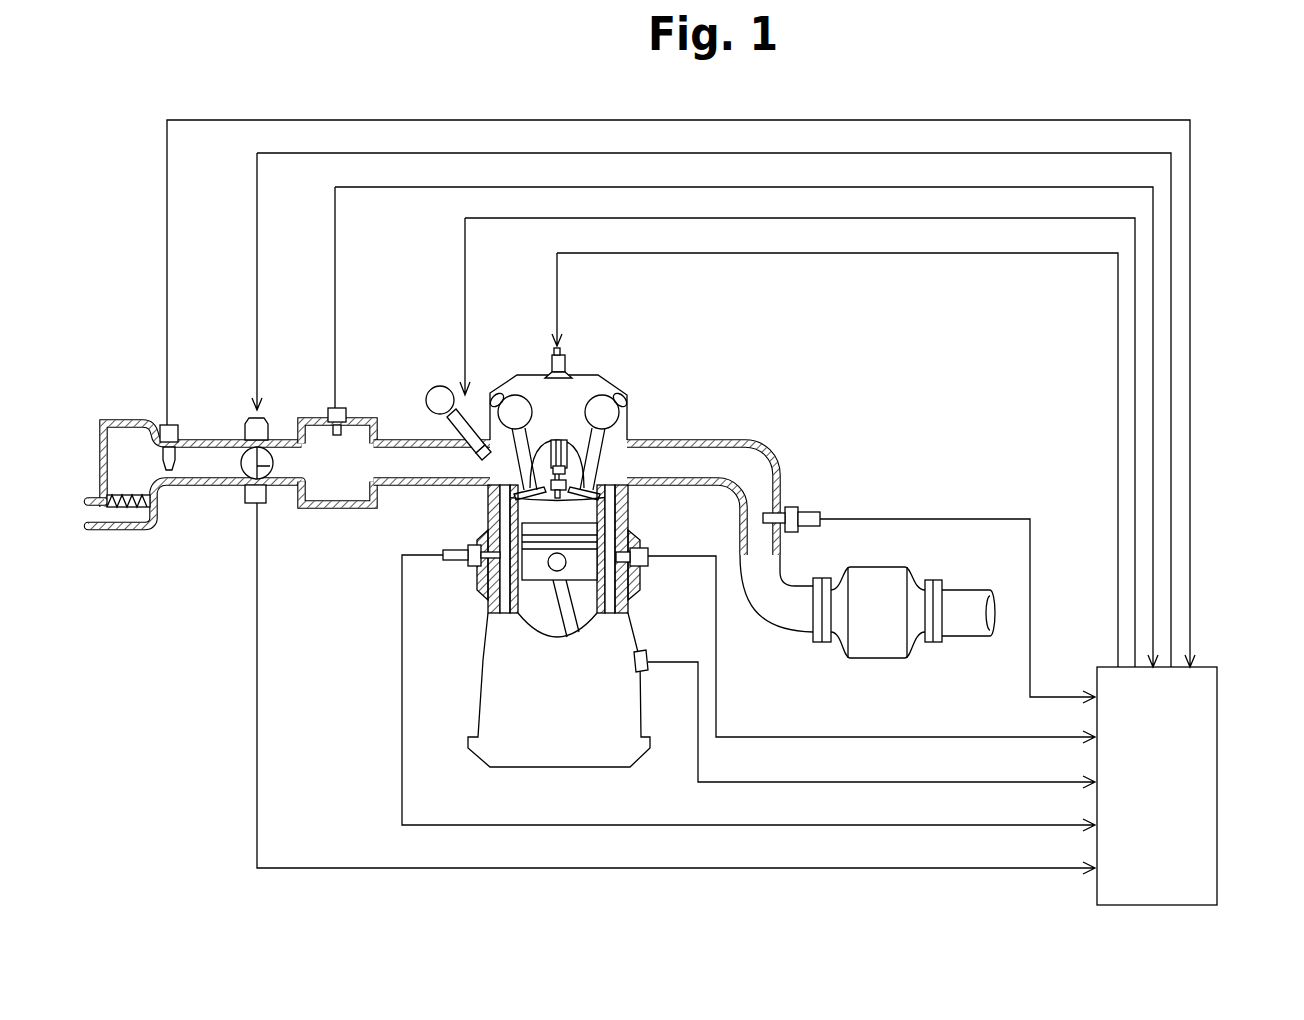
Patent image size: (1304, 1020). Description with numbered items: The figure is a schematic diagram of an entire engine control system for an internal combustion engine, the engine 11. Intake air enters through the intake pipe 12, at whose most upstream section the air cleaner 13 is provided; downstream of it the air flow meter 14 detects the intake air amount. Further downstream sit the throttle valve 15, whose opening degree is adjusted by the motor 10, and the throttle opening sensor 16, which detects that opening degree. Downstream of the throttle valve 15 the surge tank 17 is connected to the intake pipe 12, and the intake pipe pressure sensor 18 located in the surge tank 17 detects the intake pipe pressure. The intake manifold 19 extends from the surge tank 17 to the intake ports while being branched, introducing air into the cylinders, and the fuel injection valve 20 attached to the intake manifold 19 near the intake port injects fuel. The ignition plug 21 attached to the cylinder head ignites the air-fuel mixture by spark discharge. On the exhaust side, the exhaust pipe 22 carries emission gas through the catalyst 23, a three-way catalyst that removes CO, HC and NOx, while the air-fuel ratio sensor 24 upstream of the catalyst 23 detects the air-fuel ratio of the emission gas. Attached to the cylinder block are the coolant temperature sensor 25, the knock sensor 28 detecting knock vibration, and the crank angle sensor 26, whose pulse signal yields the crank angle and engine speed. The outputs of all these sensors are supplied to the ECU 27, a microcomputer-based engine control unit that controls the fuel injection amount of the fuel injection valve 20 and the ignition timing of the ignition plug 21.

The motor 10 is at (268, 430).
The engine 11 is at (602, 377).
The intake pipe 12 is at (203, 438).
The air cleaner 13 is at (118, 508).
The air flow meter 14 is at (165, 425).
The throttle valve 15 is at (270, 470).
The throttle opening sensor 16 is at (250, 504).
The surge tank 17 is at (303, 420).
The intake pipe pressure sensor 18 is at (340, 408).
The intake manifold 19 is at (387, 442).
The fuel injection valve 20 is at (477, 416).
The ignition plug 21 is at (562, 440).
The exhaust pipe 22 is at (703, 440).
The catalyst 23 is at (885, 567).
The air-fuel ratio sensor 24 is at (792, 505).
The coolant temperature sensor 25 is at (468, 566).
The crank angle sensor 26 is at (645, 653).
The ECU 27 is at (1217, 712).
The knock sensor 28 is at (650, 547).